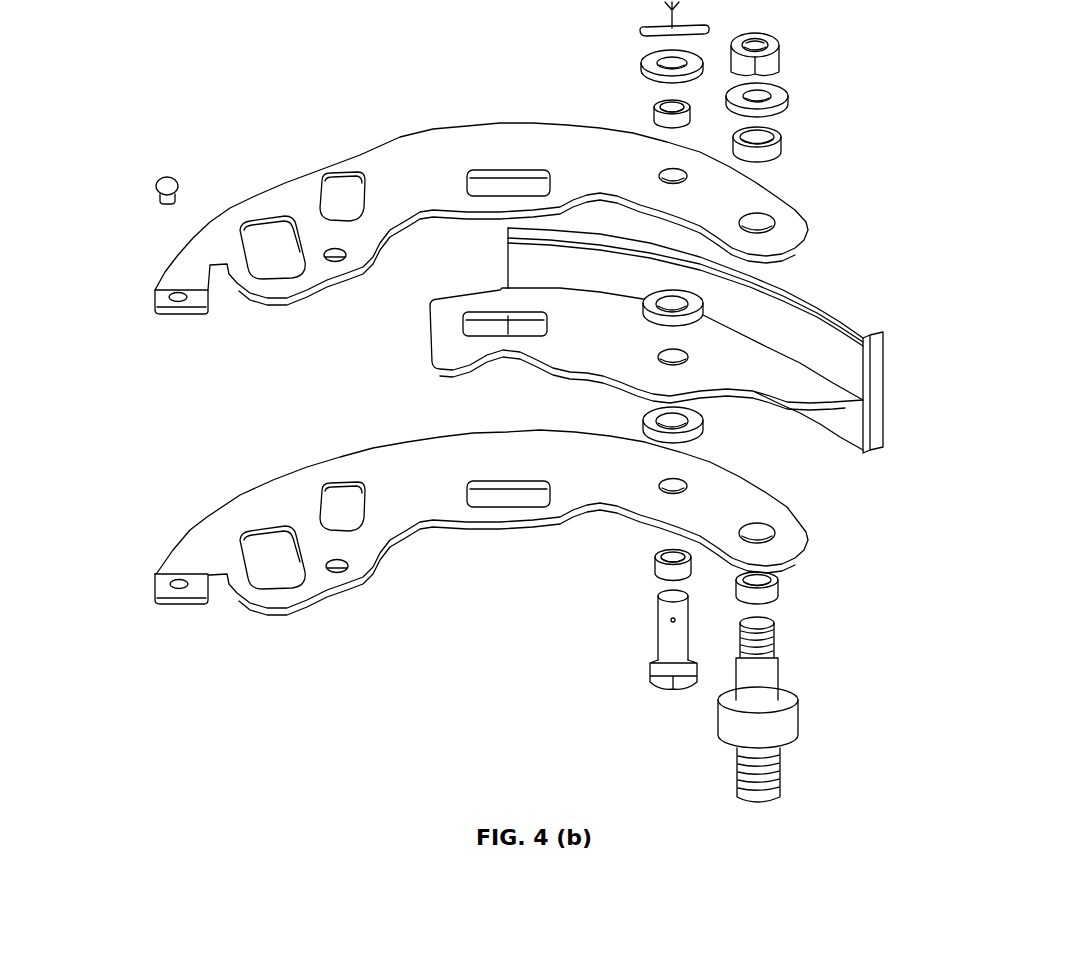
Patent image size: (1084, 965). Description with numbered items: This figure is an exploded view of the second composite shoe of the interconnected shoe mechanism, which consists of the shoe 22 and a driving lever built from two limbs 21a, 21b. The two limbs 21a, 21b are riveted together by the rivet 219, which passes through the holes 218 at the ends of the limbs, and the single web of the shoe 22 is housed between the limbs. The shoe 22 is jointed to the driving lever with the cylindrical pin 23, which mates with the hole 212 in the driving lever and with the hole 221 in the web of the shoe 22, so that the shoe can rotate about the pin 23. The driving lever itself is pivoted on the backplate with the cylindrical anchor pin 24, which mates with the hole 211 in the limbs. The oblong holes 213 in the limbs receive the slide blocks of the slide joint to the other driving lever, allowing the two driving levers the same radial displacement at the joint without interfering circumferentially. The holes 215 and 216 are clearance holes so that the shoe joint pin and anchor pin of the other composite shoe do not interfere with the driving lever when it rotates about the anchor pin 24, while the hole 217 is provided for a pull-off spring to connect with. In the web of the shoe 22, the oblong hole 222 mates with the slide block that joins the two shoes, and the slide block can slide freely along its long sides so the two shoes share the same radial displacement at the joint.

The limb 21a is at (177, 314).
The limb 21b is at (179, 606).
The shoe 22 is at (680, 340).
The cylindrical pin 23 is at (668, 640).
The cylindrical anchor pin 24 is at (773, 683).
The hole 211 is at (765, 225).
The hole 212 is at (690, 176).
The oblong holes 213 is at (514, 184).
The hole 215 is at (341, 188).
The hole 216 is at (270, 240).
The hole 217 is at (333, 261).
The holes 218 is at (175, 291).
The rivet 219 is at (168, 181).
The hole 221 is at (688, 357).
The oblong hole 222 is at (480, 328).